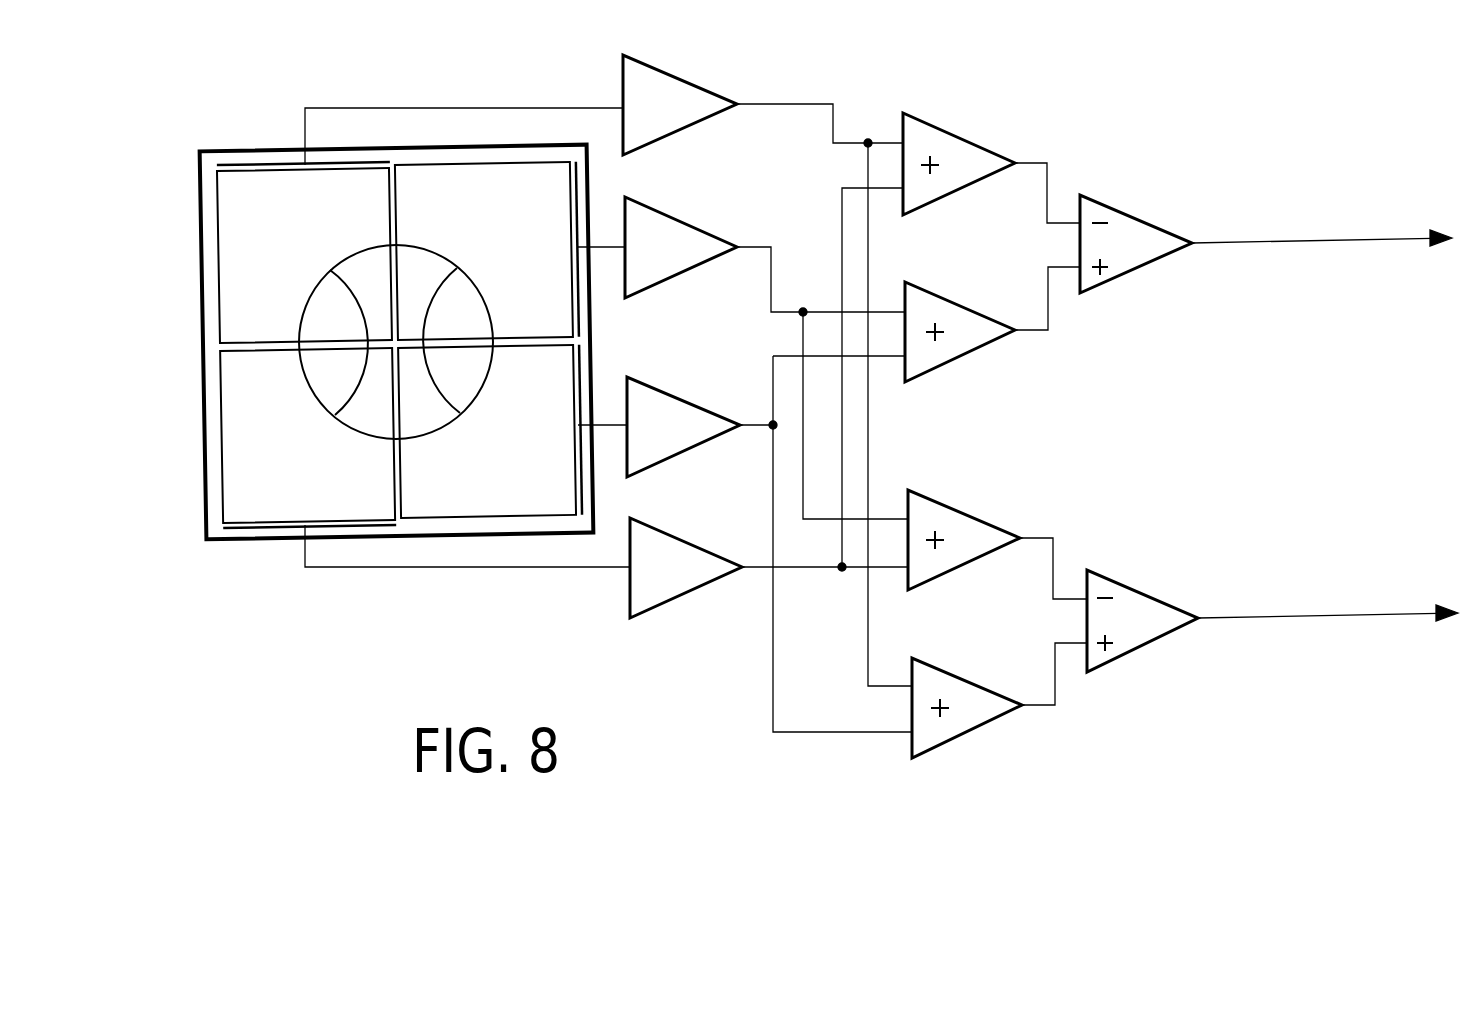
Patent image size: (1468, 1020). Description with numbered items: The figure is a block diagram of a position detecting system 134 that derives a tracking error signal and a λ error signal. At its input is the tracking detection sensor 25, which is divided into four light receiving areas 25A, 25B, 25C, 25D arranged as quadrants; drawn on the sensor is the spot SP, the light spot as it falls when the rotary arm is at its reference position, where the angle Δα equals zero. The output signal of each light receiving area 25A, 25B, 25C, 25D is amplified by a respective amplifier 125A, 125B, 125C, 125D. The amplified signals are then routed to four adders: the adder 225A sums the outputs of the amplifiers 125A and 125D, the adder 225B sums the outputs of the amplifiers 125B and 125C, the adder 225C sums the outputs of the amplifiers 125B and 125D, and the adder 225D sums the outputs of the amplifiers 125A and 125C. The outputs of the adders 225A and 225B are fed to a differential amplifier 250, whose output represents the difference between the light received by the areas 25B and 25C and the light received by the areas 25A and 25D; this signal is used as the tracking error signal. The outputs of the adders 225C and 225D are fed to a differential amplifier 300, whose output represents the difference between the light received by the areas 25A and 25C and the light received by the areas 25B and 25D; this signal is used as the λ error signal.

The tracking detection sensor 25 is at (232, 150).
The light receiving area 25A is at (232, 272).
The light receiving area 25B is at (513, 182).
The light receiving area 25C is at (475, 496).
The light receiving area 25D is at (235, 442).
The spot SP is at (350, 257).
The position detecting system 134 is at (435, 90).
The amplifier 125A is at (672, 74).
The amplifier 125B is at (678, 218).
The amplifier 125C is at (682, 397).
The amplifier 125D is at (685, 538).
The adder 225A is at (953, 132).
The adder 225B is at (962, 302).
The adder 225C is at (963, 512).
The adder 225D is at (968, 678).
The differential amplifier 250 is at (1137, 215).
The differential amplifier 300 is at (1145, 592).